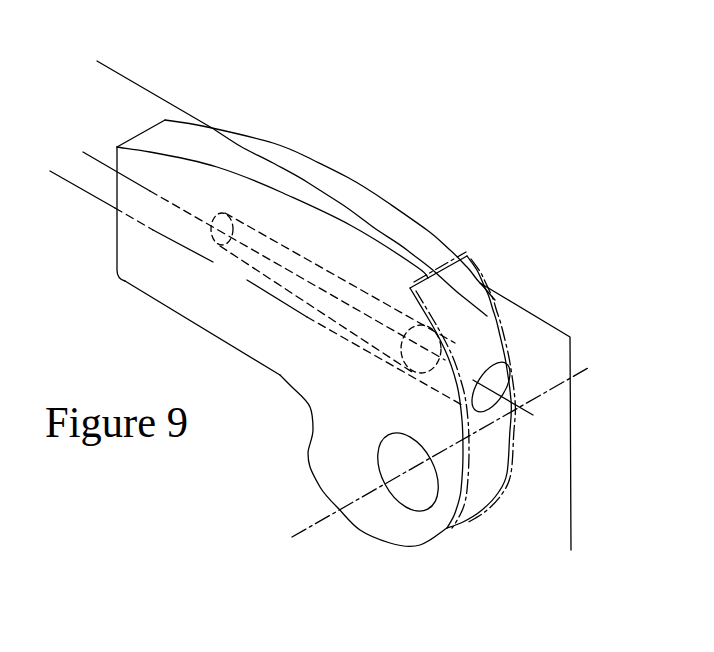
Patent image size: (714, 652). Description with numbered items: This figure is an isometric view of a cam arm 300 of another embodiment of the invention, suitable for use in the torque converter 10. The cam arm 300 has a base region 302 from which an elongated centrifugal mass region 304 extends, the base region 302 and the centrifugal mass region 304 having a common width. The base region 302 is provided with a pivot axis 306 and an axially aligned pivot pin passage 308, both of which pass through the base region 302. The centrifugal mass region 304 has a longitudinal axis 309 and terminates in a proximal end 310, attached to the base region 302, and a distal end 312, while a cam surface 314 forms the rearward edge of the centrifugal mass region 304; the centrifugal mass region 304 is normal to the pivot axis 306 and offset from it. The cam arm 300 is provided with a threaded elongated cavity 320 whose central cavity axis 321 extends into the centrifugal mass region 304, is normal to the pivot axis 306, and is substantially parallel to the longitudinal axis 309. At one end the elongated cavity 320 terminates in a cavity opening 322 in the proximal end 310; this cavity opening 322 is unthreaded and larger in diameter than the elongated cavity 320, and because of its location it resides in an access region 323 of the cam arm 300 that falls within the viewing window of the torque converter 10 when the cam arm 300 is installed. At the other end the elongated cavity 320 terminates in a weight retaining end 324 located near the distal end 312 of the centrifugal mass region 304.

The torque converter 10 is at (190, 8).
The cam arm 300 is at (430, 150).
The base region 302 is at (471, 525).
The centrifugal mass region 304 is at (347, 177).
The pivot axis 306 is at (316, 524).
The pivot pin passage 308 is at (421, 495).
The longitudinal axis 309 is at (90, 197).
The proximal end 310 is at (465, 312).
The distal end 312 is at (130, 245).
The cam surface 314 is at (235, 158).
The elongated cavity 320 is at (352, 287).
The central cavity axis 321 is at (100, 160).
The cavity opening 322 is at (502, 387).
The access region 323 is at (514, 458).
The weight retaining end 324 is at (212, 243).